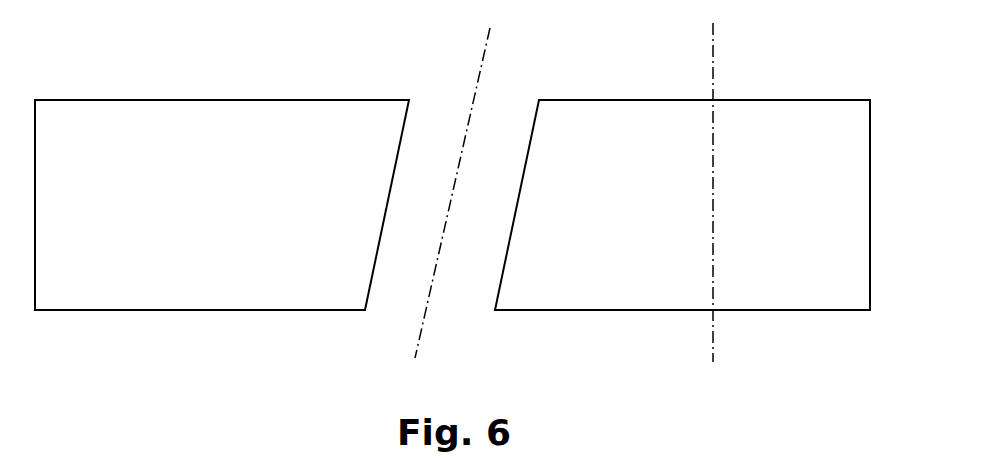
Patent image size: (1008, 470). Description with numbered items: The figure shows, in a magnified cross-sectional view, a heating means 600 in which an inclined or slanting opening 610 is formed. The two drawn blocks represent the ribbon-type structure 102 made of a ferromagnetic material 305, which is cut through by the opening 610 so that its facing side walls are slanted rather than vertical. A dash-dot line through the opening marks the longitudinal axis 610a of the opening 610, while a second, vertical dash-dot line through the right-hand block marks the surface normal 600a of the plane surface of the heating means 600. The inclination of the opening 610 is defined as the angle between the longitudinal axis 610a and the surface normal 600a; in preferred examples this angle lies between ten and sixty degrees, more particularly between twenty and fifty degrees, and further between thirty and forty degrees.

The heating means 600 is at (464, 185).
The surface normal 600a is at (713, 58).
The inclined opening 610 is at (494, 216).
The longitudinal axis of the opening 610a is at (483, 62).
The ribbon-type structure 102 is at (452, 205).
The ferromagnetic material 305 is at (237, 224).